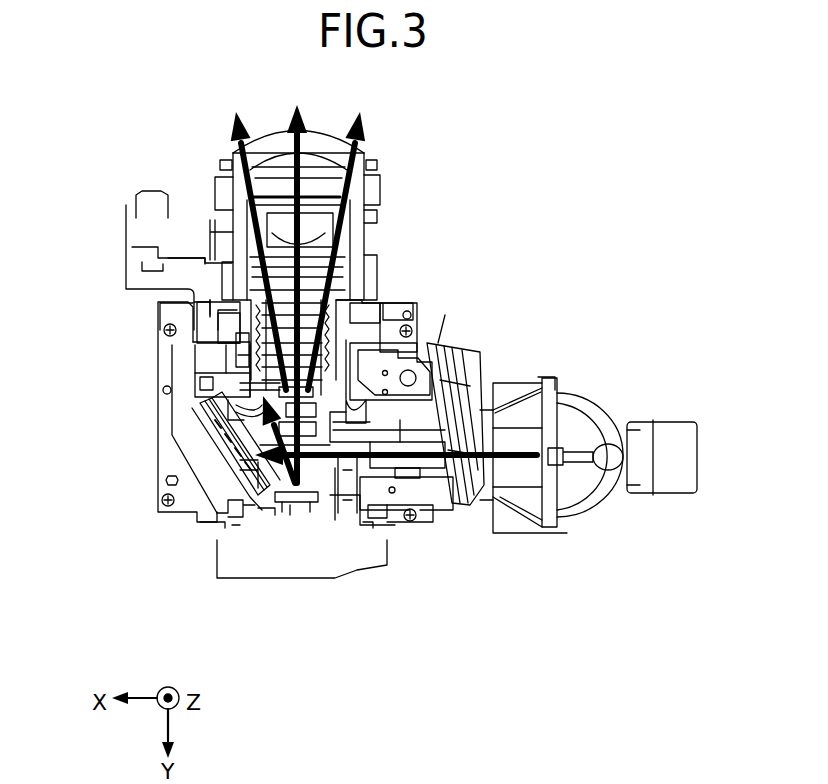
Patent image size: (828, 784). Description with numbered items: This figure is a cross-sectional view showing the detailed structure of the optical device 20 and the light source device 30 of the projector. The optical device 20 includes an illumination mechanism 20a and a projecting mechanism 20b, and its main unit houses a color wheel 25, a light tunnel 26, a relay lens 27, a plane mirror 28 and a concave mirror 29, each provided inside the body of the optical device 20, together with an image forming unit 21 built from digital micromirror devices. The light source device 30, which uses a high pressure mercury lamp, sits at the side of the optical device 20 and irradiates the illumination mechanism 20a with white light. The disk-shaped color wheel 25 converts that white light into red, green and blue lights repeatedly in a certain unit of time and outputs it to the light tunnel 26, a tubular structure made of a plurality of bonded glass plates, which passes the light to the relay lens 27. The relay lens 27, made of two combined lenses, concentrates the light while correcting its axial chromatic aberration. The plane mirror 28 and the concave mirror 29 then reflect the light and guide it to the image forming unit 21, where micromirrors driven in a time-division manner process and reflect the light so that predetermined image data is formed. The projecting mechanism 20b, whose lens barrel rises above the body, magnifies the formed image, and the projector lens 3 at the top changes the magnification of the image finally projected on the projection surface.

The projector lens 3 is at (331, 138).
The optical device 20 is at (104, 200).
The illumination mechanism 20a is at (113, 290).
The projecting mechanism 20b is at (384, 194).
The image forming unit 21 is at (292, 502).
The color wheel 25 is at (480, 380).
The light tunnel 26 is at (418, 480).
The relay lens 27 is at (358, 485).
The plane mirror 28 is at (240, 448).
The concave mirror 29 is at (236, 405).
The light source device 30 is at (614, 529).